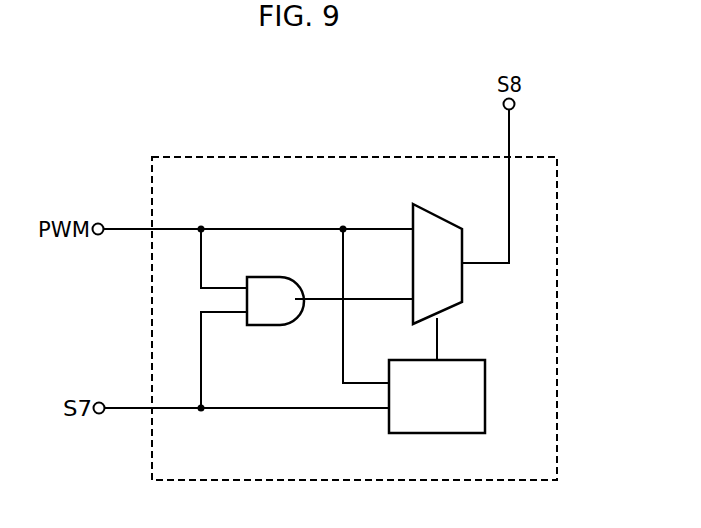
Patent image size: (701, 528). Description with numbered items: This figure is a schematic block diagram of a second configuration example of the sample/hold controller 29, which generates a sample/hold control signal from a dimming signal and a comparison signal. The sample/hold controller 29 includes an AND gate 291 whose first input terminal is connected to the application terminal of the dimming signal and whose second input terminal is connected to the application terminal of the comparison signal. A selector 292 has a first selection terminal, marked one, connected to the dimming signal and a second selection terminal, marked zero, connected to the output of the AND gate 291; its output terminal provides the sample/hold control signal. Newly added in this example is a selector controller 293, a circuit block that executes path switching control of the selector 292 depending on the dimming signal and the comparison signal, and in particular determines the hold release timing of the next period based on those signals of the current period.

The sample/hold controller 29 is at (352, 157).
The AND gate 291 is at (269, 276).
The selector 292 is at (440, 218).
The selector controller 293 is at (486, 398).